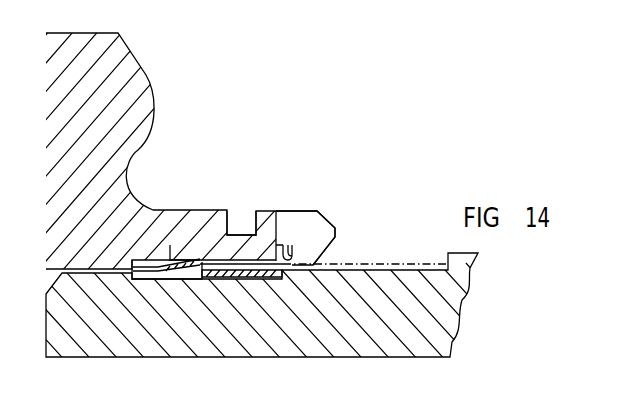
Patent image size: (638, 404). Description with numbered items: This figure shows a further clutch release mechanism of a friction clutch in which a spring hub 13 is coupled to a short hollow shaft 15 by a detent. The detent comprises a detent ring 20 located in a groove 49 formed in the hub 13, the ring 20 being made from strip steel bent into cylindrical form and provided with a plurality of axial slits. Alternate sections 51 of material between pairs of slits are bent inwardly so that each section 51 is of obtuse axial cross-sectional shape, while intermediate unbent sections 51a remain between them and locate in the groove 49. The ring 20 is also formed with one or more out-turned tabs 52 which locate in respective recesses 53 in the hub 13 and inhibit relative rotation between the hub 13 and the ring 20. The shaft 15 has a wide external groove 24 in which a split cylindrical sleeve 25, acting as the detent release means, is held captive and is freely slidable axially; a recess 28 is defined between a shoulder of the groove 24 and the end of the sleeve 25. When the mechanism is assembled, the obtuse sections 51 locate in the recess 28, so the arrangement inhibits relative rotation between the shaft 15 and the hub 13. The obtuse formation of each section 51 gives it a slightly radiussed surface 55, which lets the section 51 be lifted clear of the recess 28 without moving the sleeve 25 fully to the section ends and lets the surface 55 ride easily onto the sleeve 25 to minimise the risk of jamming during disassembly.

The hub 13 is at (110, 68).
The groove 49 is at (140, 258).
The section 51 is at (198, 256).
The intermediate unbent section 51a is at (168, 265).
The split cylindrical sleeve 25 is at (261, 269).
The recess 53 is at (305, 220).
The out-turned tab 52 is at (293, 247).
The radiussed surface 55 is at (163, 282).
The recess 28 is at (188, 280).
The external groove 24 is at (233, 279).
The detent ring 20 is at (262, 282).
The shaft 15 is at (462, 295).